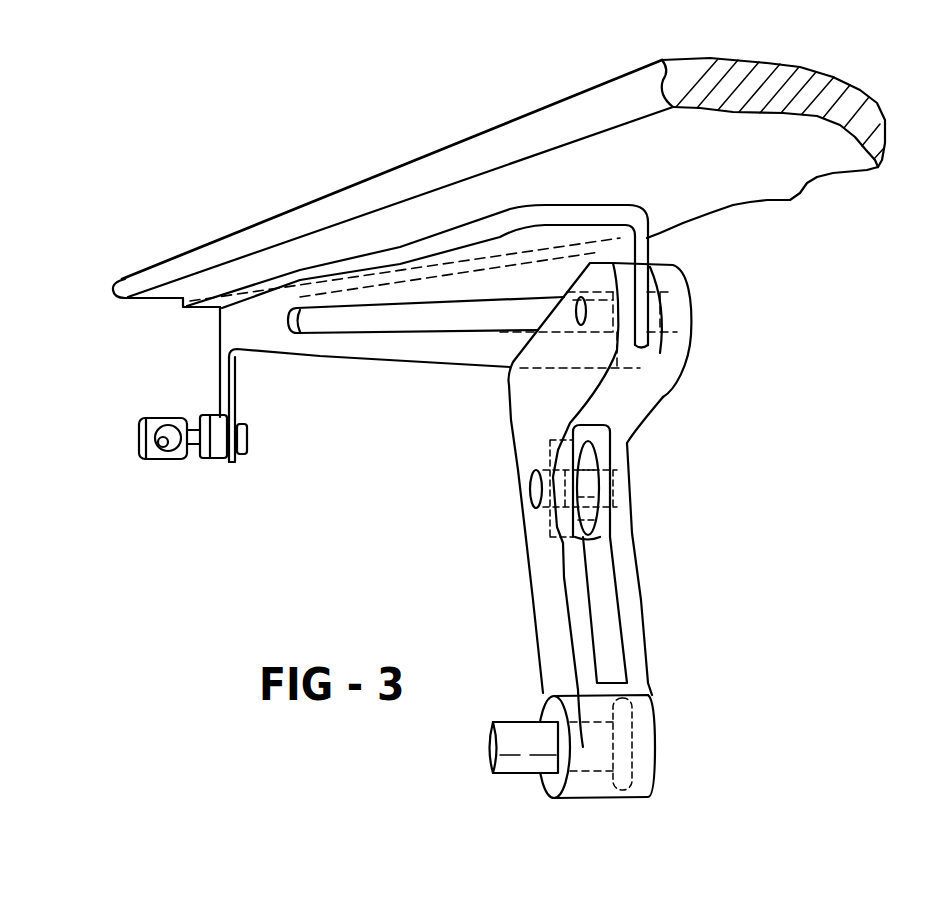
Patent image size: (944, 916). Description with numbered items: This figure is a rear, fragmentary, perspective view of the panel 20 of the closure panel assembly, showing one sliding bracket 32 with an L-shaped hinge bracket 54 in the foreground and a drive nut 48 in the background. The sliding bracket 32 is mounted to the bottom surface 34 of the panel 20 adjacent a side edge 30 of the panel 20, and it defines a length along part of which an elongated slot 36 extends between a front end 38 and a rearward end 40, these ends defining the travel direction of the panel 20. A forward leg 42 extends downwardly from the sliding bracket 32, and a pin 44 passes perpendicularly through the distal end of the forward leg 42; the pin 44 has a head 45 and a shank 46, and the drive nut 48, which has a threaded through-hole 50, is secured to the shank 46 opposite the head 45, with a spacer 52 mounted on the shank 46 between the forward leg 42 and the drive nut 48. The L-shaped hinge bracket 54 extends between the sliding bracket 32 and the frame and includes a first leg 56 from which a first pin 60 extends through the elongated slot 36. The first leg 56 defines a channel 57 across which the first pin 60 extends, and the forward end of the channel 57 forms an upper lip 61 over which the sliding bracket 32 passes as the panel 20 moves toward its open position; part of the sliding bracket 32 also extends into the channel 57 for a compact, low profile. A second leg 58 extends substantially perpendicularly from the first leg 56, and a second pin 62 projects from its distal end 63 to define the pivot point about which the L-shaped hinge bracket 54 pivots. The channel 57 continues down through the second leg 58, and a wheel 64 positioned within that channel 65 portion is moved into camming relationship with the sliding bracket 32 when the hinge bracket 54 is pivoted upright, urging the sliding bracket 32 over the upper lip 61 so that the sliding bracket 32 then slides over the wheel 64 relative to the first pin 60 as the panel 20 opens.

The panel 20 is at (114, 283).
The side edge 30 is at (420, 197).
The sliding bracket 32 is at (333, 273).
The bottom surface 34 is at (712, 169).
The elongated slot 36 is at (412, 324).
The front end 38 is at (296, 335).
The rearward end 40 is at (640, 368).
The forward leg 42 is at (220, 410).
The pin 44 is at (241, 455).
The head 45 is at (250, 440).
The shank 46 is at (123, 463).
The drive nut 48 is at (140, 447).
The threaded through-hole 50 is at (163, 443).
The spacer 52 is at (207, 458).
The L-shaped hinge bracket 54 is at (627, 467).
The first leg 56 is at (664, 398).
The channel 57 is at (658, 292).
The second leg 58 is at (647, 650).
The first pin 60 is at (522, 388).
The upper lip 61 is at (652, 340).
The second pin 62 is at (487, 763).
The distal end 63 is at (547, 800).
The wheel 64 is at (597, 530).
The channel 65 is at (606, 427).